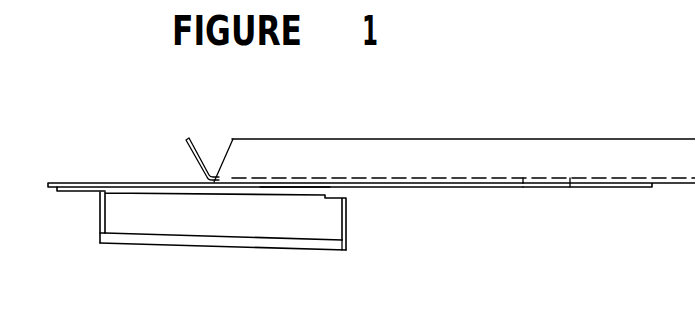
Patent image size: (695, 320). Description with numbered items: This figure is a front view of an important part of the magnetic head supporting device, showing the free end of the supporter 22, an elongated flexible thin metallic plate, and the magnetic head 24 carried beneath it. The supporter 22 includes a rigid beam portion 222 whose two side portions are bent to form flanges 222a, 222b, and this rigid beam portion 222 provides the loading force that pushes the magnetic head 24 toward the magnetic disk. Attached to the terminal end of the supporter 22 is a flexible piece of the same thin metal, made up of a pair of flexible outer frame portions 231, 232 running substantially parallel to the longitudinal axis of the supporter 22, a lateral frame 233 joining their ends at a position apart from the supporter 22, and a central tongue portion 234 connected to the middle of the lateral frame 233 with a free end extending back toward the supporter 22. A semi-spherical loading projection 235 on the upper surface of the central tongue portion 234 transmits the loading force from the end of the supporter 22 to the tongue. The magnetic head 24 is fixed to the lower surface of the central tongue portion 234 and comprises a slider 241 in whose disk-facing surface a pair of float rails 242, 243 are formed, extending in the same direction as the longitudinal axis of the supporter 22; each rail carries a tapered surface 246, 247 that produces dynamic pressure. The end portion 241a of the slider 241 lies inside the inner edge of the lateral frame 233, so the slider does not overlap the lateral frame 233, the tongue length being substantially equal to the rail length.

The supporter 22 is at (606, 133).
The rigid beam portion 222 is at (665, 177).
The flange 222a is at (482, 137).
The flange 222b is at (446, 157).
The flexible outer frame portion 231 is at (285, 145).
The flexible outer frame portion 232 is at (128, 183).
The lateral frame 233 is at (73, 193).
The central tongue portion 234 is at (286, 190).
The loading projection 235 is at (226, 190).
The magnetic head 24 is at (352, 216).
The slider 241 is at (138, 242).
The end portion of the slider 241a is at (99, 232).
The float rail 242 is at (223, 275).
The float rail 243 is at (227, 240).
The tapered surface 246 is at (421, 259).
The tapered surface 247 is at (340, 248).